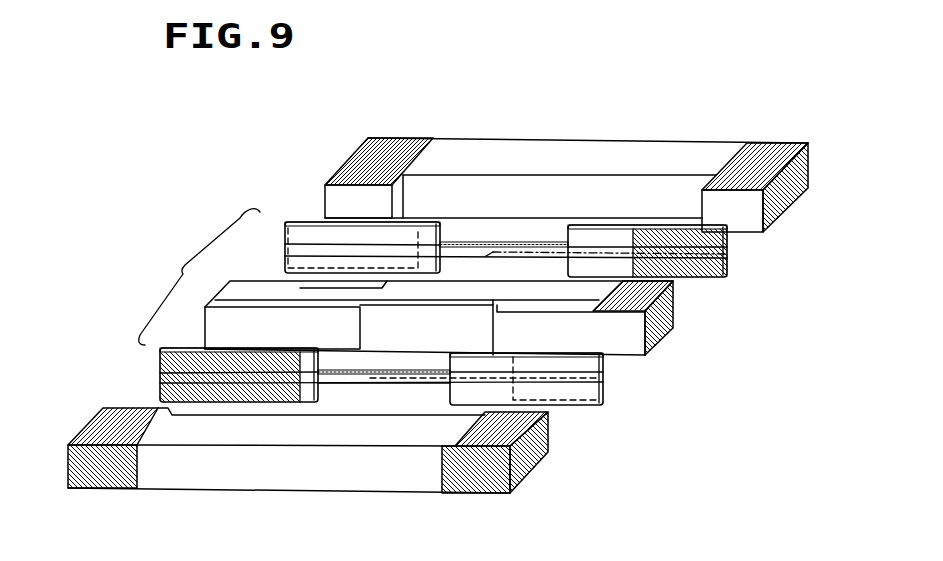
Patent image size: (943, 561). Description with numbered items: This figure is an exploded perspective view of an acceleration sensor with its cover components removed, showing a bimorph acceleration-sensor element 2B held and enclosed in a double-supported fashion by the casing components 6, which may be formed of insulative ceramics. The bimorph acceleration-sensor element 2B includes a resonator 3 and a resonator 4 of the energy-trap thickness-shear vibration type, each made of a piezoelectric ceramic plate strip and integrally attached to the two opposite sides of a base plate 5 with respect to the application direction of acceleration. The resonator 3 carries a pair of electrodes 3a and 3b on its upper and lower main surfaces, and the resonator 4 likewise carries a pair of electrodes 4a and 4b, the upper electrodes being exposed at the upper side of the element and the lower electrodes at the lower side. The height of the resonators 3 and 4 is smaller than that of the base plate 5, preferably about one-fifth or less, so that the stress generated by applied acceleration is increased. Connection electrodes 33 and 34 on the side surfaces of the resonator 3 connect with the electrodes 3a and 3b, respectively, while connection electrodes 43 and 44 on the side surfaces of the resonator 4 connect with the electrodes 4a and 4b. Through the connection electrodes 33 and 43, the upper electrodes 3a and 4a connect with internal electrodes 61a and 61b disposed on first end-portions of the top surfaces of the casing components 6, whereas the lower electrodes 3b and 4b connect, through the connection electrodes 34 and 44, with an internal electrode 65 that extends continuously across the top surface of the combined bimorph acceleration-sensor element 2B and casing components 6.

The bimorph acceleration-sensor element 2B is at (199, 277).
The resonator 3 is at (397, 384).
The electrode 3a is at (350, 374).
The electrode 3b is at (418, 369).
The resonator 4 is at (513, 236).
The electrode 4a is at (472, 242).
The electrode 4b is at (547, 250).
The base plate 5 is at (441, 293).
The casing components 6 is at (572, 152).
The connection electrode 33 is at (167, 364).
The connection electrode 34 is at (573, 403).
The connection electrode 43 is at (283, 245).
The connection electrode 44 is at (697, 268).
The internal electrode 61a is at (97, 422).
The internal electrode 61b is at (368, 155).
The internal electrode 65 is at (768, 178).